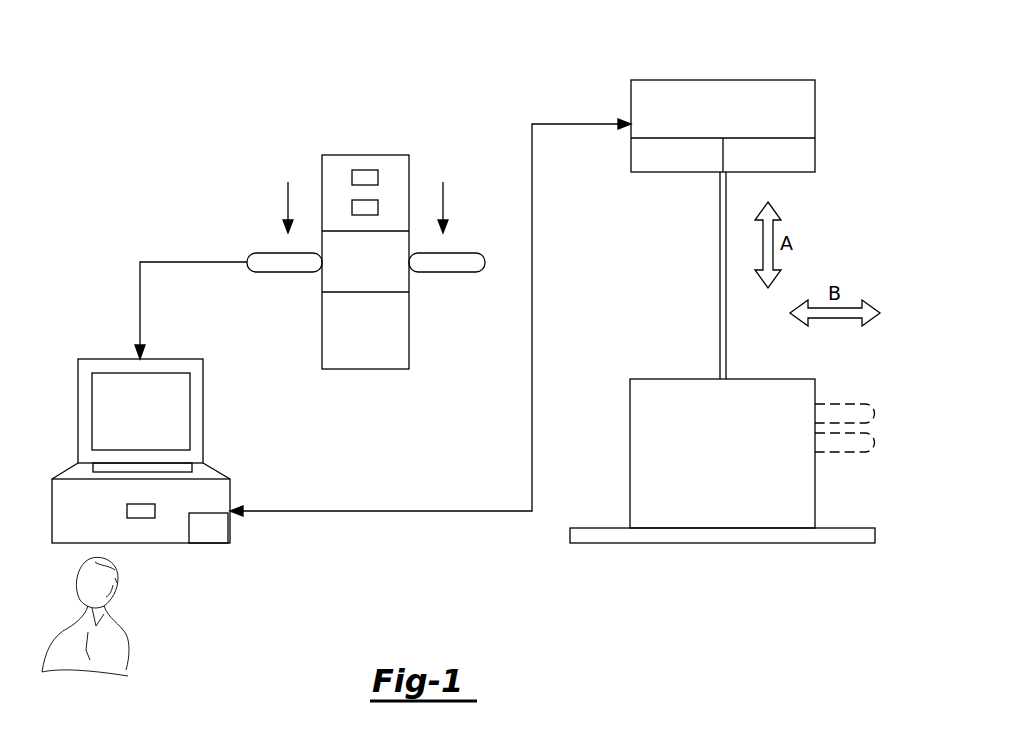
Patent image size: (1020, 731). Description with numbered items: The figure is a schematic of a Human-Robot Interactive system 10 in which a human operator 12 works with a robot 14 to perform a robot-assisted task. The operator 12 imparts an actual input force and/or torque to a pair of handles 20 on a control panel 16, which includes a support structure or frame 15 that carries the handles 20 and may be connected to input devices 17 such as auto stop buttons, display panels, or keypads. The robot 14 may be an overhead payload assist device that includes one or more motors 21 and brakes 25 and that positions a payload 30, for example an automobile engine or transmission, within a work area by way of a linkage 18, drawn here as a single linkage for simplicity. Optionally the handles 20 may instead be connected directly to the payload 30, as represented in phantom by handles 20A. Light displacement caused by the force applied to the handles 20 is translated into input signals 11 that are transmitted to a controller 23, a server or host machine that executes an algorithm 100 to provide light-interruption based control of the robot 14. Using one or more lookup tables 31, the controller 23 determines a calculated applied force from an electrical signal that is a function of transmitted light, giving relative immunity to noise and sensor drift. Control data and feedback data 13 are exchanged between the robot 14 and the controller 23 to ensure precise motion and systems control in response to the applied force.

The Human-Robot Interactive (HRI) system 10 is at (850, 82).
The input signals 11 is at (140, 318).
The human operator 12 is at (126, 644).
The control data and feedback data 13 is at (532, 316).
The robot 14 is at (723, 80).
The support structure or frame 15 is at (365, 369).
The control panel 16 is at (356, 98).
The input devices 17 is at (378, 207).
The linkage 18 is at (720, 262).
The handles 20 is at (282, 272).
The handles directly connected to the payload 20A is at (838, 404).
The motor 21 is at (631, 160).
The controller 23 is at (203, 413).
The brake 25 is at (815, 157).
The payload 30 is at (672, 379).
The lookup tables 31 is at (140, 518).
The algorithm 100 is at (141, 503).